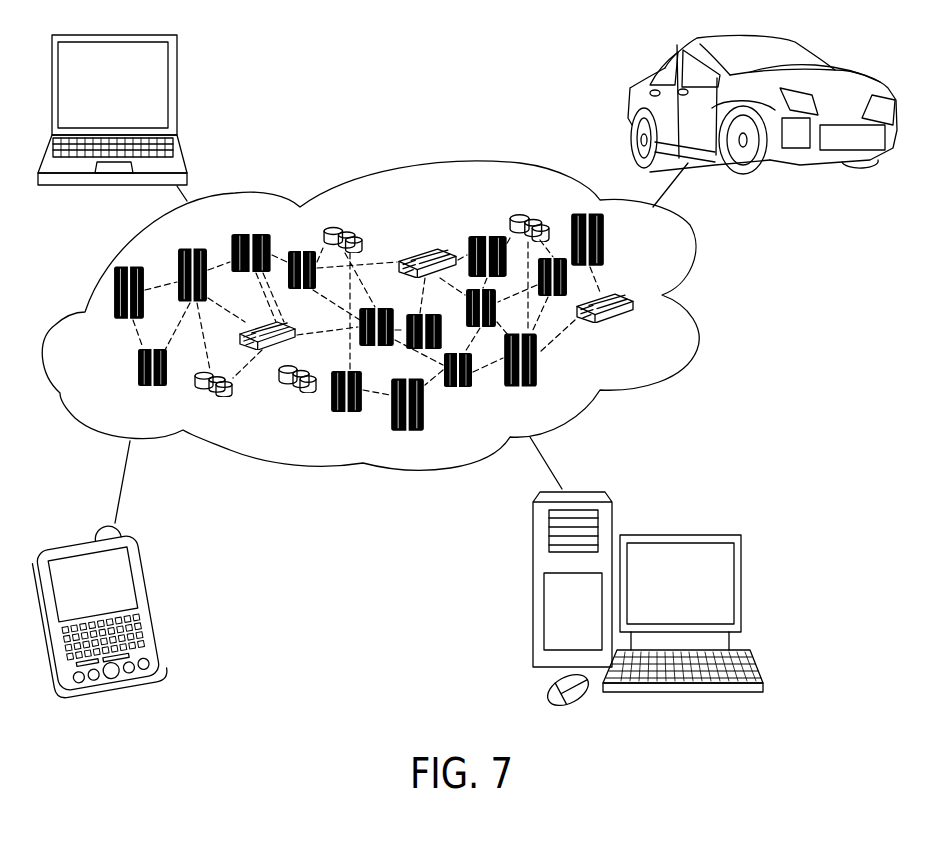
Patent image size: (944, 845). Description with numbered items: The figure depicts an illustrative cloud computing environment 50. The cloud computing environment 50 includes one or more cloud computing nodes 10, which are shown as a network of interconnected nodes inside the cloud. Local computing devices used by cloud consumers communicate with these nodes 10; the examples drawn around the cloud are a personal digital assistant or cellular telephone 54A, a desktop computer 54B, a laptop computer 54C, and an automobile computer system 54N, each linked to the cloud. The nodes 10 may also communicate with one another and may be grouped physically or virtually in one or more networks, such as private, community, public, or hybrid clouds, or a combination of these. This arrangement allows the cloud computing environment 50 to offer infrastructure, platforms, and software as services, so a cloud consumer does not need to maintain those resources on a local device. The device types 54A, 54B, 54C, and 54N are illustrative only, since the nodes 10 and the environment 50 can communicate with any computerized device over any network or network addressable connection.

The cloud computing node 10 is at (399, 315).
The cloud computing environment 50 is at (697, 250).
The personal digital assistant or cellular telephone 54A is at (147, 585).
The desktop computer 54B is at (742, 583).
The laptop computer 54C is at (177, 87).
The automobile computer system 54N is at (807, 56).